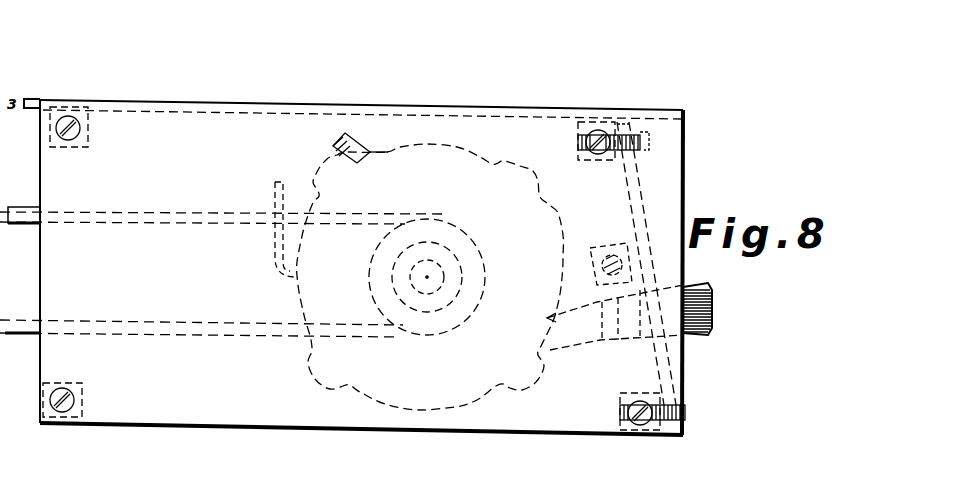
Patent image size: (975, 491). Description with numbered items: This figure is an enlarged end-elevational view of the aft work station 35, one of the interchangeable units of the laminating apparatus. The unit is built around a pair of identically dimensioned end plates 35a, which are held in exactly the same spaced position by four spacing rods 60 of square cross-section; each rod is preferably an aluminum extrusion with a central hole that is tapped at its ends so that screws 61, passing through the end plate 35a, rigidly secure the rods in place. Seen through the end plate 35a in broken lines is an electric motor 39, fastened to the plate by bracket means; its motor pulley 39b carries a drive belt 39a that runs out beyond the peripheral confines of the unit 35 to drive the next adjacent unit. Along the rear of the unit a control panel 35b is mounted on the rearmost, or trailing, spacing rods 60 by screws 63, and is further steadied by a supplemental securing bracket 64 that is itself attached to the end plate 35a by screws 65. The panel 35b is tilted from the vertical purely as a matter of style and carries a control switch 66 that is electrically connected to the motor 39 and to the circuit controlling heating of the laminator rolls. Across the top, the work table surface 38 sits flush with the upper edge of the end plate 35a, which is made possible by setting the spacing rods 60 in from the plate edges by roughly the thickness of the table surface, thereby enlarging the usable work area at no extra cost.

The aft work station 35 is at (345, 432).
The end plate 35a is at (222, 409).
The control panel 35b is at (637, 187).
The work table surface 38 is at (353, 72).
The electric motor 39 is at (482, 400).
The drive belt 39a is at (239, 290).
The motor pulley 39b is at (410, 322).
The spacing rod 60 is at (88, 106).
The screw 61 is at (70, 120).
The screw 63 is at (649, 140).
The supplemental securing bracket 64 is at (608, 246).
The screw 65 is at (598, 248).
The control switch 66 is at (713, 308).